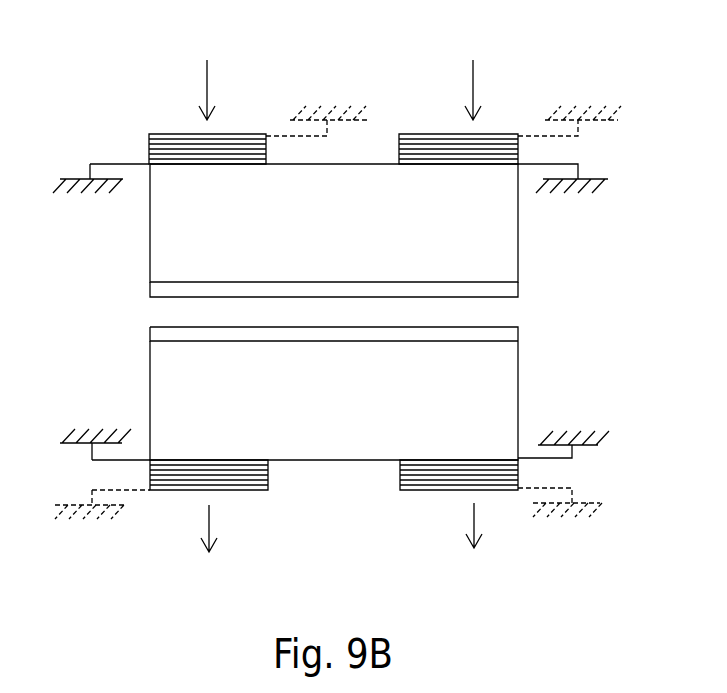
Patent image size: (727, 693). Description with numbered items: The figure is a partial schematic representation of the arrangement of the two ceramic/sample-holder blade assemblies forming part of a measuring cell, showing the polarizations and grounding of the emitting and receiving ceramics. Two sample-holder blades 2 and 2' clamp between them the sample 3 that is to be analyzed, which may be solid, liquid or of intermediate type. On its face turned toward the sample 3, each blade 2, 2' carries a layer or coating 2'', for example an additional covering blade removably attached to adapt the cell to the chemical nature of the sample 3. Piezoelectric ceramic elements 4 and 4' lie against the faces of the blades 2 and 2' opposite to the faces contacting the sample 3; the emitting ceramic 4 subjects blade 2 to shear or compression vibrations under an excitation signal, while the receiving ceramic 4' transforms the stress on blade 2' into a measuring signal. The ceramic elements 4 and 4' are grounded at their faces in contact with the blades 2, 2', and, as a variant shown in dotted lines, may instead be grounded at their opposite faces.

The sample-holder blade 2 is at (287, 223).
The sample-holder blade 2' is at (368, 400).
The layer or coating 2'' is at (379, 302).
The sample 3 is at (138, 319).
The piezoelectric ceramic element 4 is at (333, 90).
The piezoelectric ceramic element 4' is at (334, 528).